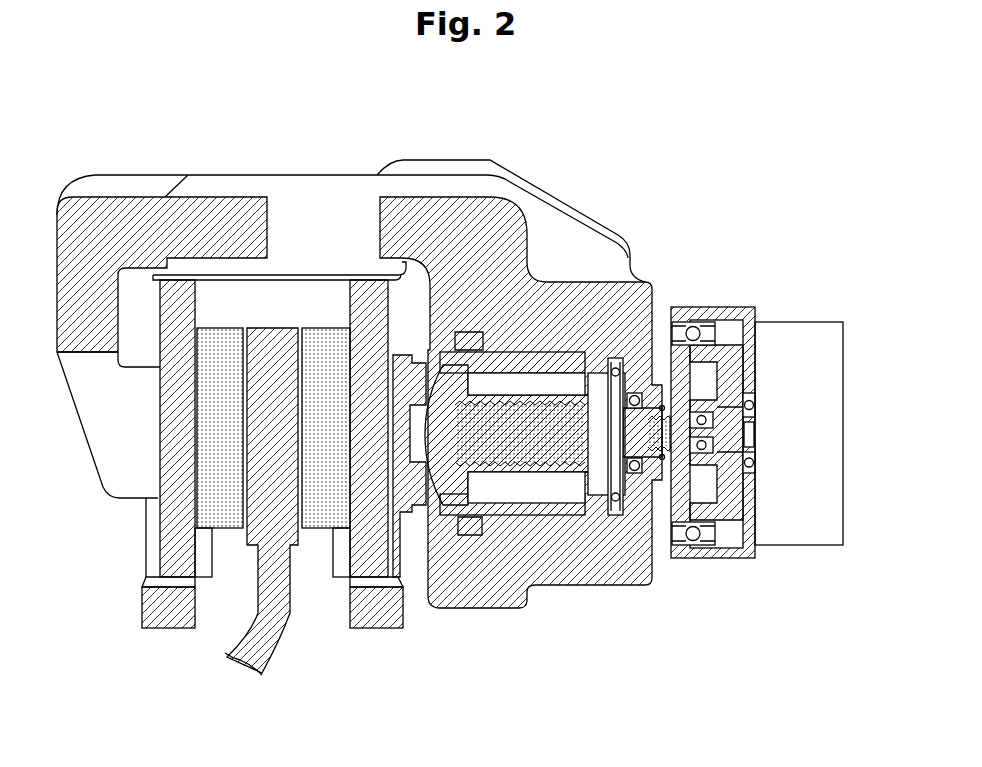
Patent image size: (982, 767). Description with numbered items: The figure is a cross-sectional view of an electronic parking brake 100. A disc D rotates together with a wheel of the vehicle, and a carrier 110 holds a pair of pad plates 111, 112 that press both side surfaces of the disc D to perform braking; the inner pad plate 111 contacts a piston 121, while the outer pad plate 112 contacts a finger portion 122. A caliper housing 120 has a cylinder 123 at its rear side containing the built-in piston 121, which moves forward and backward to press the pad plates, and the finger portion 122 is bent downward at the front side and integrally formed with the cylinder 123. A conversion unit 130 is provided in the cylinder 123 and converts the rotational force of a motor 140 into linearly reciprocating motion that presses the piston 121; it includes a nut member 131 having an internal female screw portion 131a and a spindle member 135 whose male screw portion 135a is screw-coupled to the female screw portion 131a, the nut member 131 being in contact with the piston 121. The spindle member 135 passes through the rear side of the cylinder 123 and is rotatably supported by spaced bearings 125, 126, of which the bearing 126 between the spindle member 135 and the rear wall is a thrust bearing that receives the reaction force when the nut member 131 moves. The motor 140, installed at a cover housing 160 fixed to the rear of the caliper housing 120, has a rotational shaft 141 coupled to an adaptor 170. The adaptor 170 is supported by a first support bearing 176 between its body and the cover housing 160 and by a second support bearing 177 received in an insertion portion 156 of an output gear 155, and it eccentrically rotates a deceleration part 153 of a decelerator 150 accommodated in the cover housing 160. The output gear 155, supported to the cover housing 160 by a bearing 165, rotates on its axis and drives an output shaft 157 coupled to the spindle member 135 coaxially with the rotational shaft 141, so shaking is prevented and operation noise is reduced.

The electronic parking brake 100 is at (605, 160).
The carrier 110 is at (162, 618).
The inner pad plate 111 is at (352, 578).
The outer pad plate 112 is at (168, 552).
The caliper housing 120 is at (448, 156).
The piston 121 is at (412, 512).
The finger portion 122 is at (85, 425).
The cylinder 123 is at (613, 300).
The bearing 125 is at (600, 395).
The bearing 126 is at (643, 312).
The conversion unit 130 is at (548, 482).
The nut member 131 is at (507, 521).
The female screw portion 131a is at (480, 408).
The spindle member 135 is at (563, 524).
The male screw portion 135a is at (534, 408).
The motor 140 is at (837, 402).
The rotational shaft 141 is at (757, 435).
The decelerator 150 is at (754, 440).
The deceleration part 153 is at (737, 509).
The output gear 155 is at (673, 515).
The insertion portion 156 is at (733, 532).
The output shaft 157 is at (645, 478).
The cover housing 160 is at (746, 326).
The bearing 165 is at (707, 538).
The adaptor 170 is at (757, 353).
The first support bearing 176 is at (757, 397).
The second support bearing 177 is at (729, 402).
The disc D is at (270, 643).